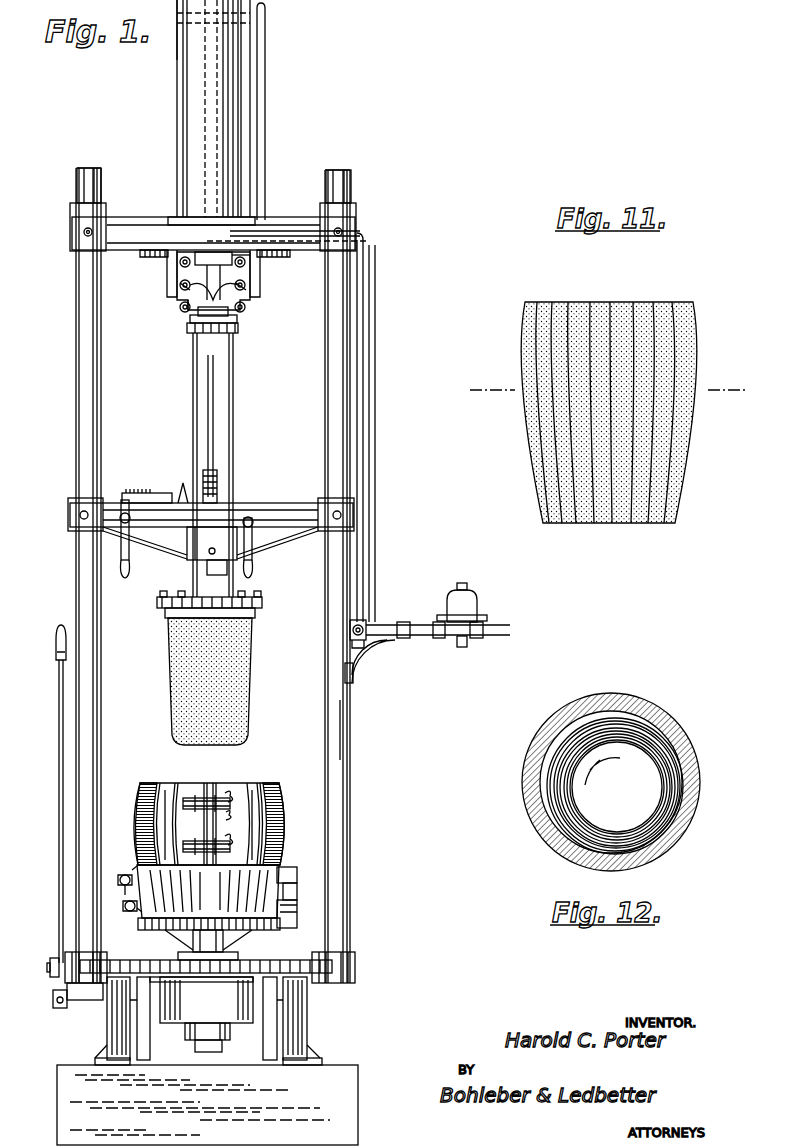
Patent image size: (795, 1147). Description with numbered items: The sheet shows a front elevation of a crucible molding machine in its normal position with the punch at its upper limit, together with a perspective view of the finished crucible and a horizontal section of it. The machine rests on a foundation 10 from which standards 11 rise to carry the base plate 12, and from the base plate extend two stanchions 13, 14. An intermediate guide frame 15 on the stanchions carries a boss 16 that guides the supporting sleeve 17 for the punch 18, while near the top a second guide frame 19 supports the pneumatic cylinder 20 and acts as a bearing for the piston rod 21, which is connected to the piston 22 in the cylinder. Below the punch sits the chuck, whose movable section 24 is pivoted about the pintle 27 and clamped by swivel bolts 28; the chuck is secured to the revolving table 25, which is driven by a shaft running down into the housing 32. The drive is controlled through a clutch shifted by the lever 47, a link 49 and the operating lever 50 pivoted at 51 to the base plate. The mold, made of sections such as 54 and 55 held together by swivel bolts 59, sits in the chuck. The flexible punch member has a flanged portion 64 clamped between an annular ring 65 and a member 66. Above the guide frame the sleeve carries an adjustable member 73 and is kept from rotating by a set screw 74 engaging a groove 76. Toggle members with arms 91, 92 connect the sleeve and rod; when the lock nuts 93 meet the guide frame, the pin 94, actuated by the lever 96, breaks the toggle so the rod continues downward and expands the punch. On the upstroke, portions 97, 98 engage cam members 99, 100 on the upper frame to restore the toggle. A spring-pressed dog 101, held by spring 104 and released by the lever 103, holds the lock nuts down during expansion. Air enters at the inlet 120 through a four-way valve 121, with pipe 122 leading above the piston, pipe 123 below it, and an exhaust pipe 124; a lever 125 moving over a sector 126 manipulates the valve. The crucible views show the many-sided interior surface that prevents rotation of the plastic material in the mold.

In FIG. 1, the foundation 10 is at (358, 1098).
In FIG. 1, the standards 11 is at (307, 1026).
In FIG. 1, the base plate 12 is at (345, 961).
In FIG. 11, the base plate 12 is at (606, 391).
In FIG. 1, the stanchion 13 is at (350, 852).
In FIG. 1, the stanchion 14 is at (101, 746).
In FIG. 1, the guide frame 15 is at (284, 507).
In FIG. 1, the bearing or boss 16 is at (187, 545).
In FIG. 1, the supporting sleeve 17 is at (233, 412).
In FIG. 1, the punch 18 is at (252, 674).
In FIG. 1, the second guide frame 19 is at (146, 220).
In FIG. 1, the pneumatic cylinder 20 is at (237, 110).
In FIG. 1, the piston rod 21 is at (236, 268).
In FIG. 1, the piston 22 is at (186, 28).
In FIG. 1, the chuck section 24 is at (270, 868).
In FIG. 1, the revolving table 25 is at (258, 936).
In FIG. 1, the pintle 27 is at (292, 902).
In FIG. 1, the swivel bolts 28 is at (124, 887).
In FIG. 1, the housing 32 is at (178, 1022).
In FIG. 1, the lever 47 is at (92, 1002).
In FIG. 1, the link 49 is at (55, 1006).
In FIG. 1, the operating lever 50 is at (58, 803).
In FIG. 1, the pivot 51 is at (49, 968).
In FIG. 1, the mold section 54 is at (185, 779).
In FIG. 1, the mold section 55 is at (256, 784).
In FIG. 1, the swivel bolts 59 is at (226, 817).
In FIG. 1, the flanged portion 64 is at (262, 603).
In FIG. 1, the annular ring 65 is at (256, 614).
In FIG. 1, the member 66 is at (262, 597).
In FIG. 1, the member 73 is at (236, 322).
In FIG. 1, the set screw 74 is at (207, 563).
In FIG. 1, the groove 76 is at (208, 388).
In FIG. 1, the arm 91 is at (187, 314).
In FIG. 1, the arm 92 is at (230, 312).
In FIG. 1, the adjustable lock nuts 93 is at (236, 330).
In FIG. 1, the pin 94 is at (218, 479).
In FIG. 1, the manually actuating lever 96 is at (253, 548).
In FIG. 1, the portion of toggle member 97 is at (176, 291).
In FIG. 1, the portion of toggle member 98 is at (246, 292).
In FIG. 1, the cam member 99 is at (168, 272).
In FIG. 1, the cam member 100 is at (252, 268).
In FIG. 1, the spring-pressed dog 101 is at (180, 487).
In FIG. 1, the manually operated lever 103 is at (120, 548).
In FIG. 1, the spring 104 is at (140, 493).
In FIG. 1, the inlet 120 is at (483, 623).
In FIG. 1, the four-way valve 121 is at (368, 624).
In FIG. 1, the pipe 122 is at (266, 143).
In FIG. 1, the pipe 123 is at (278, 233).
In FIG. 1, the exhaust pipe 124 is at (350, 732).
In FIG. 1, the lever 125 is at (420, 637).
In FIG. 1, the sector 126 is at (380, 672).